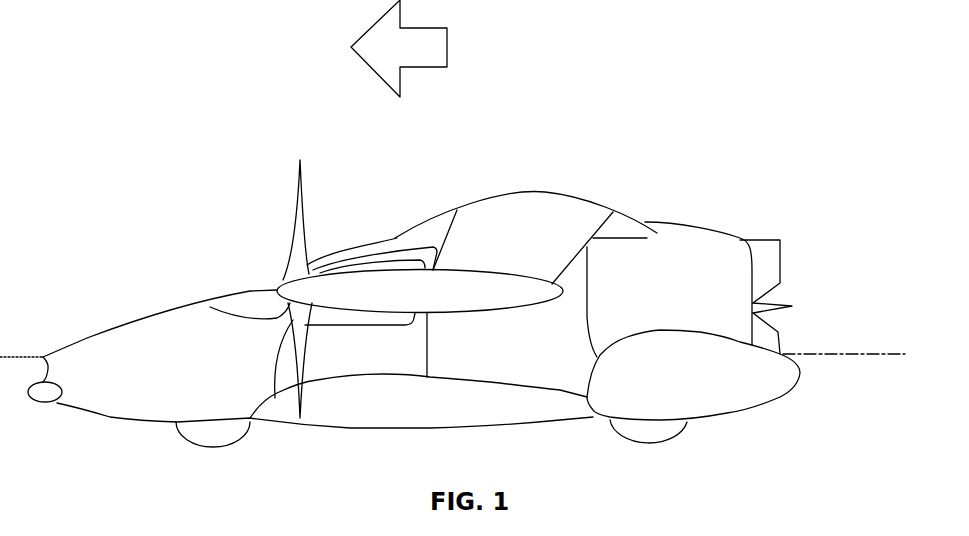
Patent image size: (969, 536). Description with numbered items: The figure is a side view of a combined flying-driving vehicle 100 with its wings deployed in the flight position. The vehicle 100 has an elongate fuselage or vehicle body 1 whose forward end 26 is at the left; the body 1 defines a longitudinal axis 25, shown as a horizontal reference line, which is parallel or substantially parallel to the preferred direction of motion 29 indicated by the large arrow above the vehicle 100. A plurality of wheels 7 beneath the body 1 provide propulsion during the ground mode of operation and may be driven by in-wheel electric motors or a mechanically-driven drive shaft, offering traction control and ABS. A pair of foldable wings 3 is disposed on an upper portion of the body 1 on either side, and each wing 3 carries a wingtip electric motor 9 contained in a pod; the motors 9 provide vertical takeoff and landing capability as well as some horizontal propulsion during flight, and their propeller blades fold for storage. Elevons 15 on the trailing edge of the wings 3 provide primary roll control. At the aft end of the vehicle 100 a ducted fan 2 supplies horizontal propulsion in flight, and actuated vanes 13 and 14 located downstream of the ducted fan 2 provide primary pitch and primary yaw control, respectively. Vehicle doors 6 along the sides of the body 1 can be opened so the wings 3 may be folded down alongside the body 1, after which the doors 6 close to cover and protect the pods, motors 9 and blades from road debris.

The vehicle 100 is at (127, 41).
The vehicle body 1 is at (112, 407).
The ducted fan 2 is at (696, 242).
The wings 3 is at (500, 222).
The vehicle doors 6 is at (398, 413).
The wheels 7 is at (215, 433).
The wingtip motor 9 is at (363, 285).
The pitch vane 13 is at (793, 305).
The yaw vane 14 is at (783, 262).
The elevons 15 is at (590, 228).
The longitudinal axis 25 is at (862, 357).
The forward end 26 is at (72, 314).
The preferred direction of motion 29 is at (447, 42).